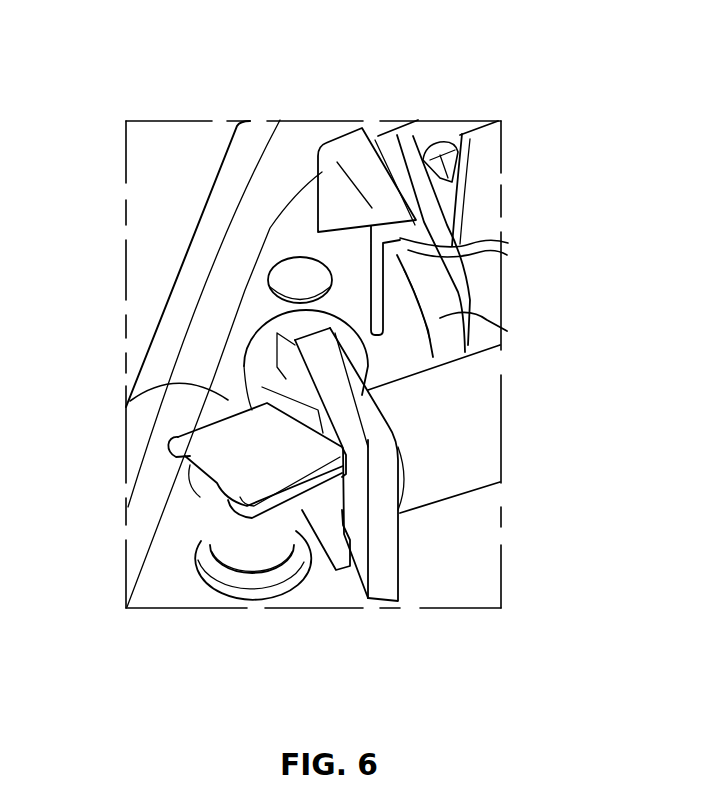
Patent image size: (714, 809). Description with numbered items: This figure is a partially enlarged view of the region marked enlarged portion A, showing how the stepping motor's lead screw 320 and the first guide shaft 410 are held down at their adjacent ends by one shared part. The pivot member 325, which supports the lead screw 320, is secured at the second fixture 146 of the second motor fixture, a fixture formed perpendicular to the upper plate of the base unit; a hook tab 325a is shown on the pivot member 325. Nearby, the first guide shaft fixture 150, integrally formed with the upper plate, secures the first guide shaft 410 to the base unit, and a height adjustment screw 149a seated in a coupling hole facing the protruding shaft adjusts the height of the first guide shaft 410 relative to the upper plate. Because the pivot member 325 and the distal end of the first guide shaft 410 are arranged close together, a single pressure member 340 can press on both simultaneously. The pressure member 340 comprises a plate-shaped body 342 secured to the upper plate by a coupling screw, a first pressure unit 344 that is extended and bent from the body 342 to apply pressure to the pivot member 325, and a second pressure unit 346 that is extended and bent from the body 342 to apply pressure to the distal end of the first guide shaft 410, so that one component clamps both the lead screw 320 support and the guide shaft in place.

The enlarged portion A is at (126, 143).
The pressure member 340 is at (236, 306).
The body 342 is at (130, 400).
The first pressure unit 344 is at (333, 207).
The second pressure unit 346 is at (223, 455).
The pivot member 325 is at (398, 157).
The hook tab 325a is at (488, 256).
The lead screw 320 is at (483, 147).
The second fixture 146 is at (483, 315).
The first guide shaft fixture 150 is at (387, 568).
The first guide shaft 410 is at (468, 462).
The height adjustment screw 149a is at (253, 550).